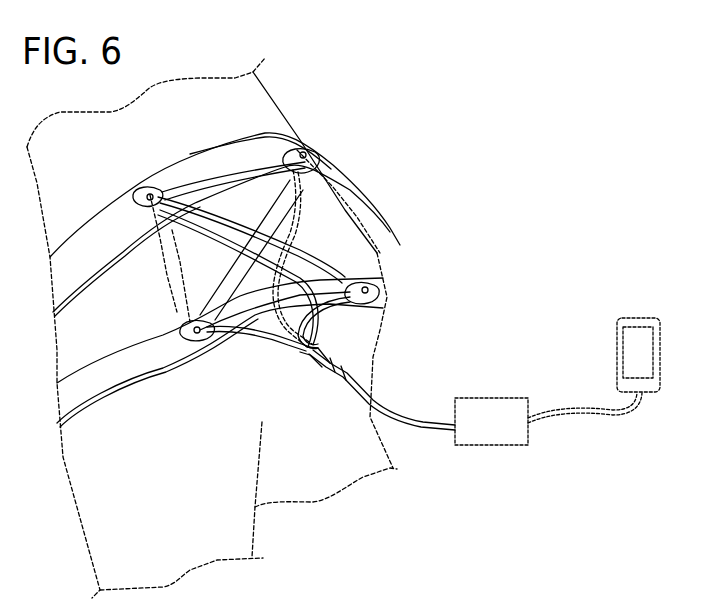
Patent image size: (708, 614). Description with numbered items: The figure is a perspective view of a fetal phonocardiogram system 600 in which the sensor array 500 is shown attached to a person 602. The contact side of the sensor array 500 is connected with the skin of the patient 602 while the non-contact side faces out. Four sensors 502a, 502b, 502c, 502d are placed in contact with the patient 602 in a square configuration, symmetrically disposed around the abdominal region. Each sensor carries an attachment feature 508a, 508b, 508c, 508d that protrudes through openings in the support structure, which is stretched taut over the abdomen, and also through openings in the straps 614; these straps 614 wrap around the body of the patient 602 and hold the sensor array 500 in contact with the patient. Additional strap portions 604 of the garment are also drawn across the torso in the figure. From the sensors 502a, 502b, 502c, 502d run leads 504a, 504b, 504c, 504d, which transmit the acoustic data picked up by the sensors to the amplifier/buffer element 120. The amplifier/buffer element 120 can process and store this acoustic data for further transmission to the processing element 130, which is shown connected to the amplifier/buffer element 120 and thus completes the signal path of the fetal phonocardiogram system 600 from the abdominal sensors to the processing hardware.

The fetal phonocardiogram system 600 is at (447, 126).
The person 602 is at (280, 111).
The strap band 604 is at (343, 163).
The straps 614 is at (120, 367).
The sensor array 500 is at (357, 250).
The sensor 502a is at (140, 190).
The sensor 502b is at (333, 145).
The sensor 502c is at (385, 297).
The sensor 502d is at (177, 328).
The attachment feature 508a is at (150, 198).
The attachment feature 508b is at (283, 152).
The attachment feature 508c is at (372, 295).
The attachment feature 508d is at (197, 330).
The lead 504a is at (165, 215).
The lead 504b is at (310, 250).
The lead 504c is at (313, 330).
The lead 504d is at (270, 338).
The amplifier/buffer element 120 is at (509, 431).
The processing element 130 is at (633, 318).